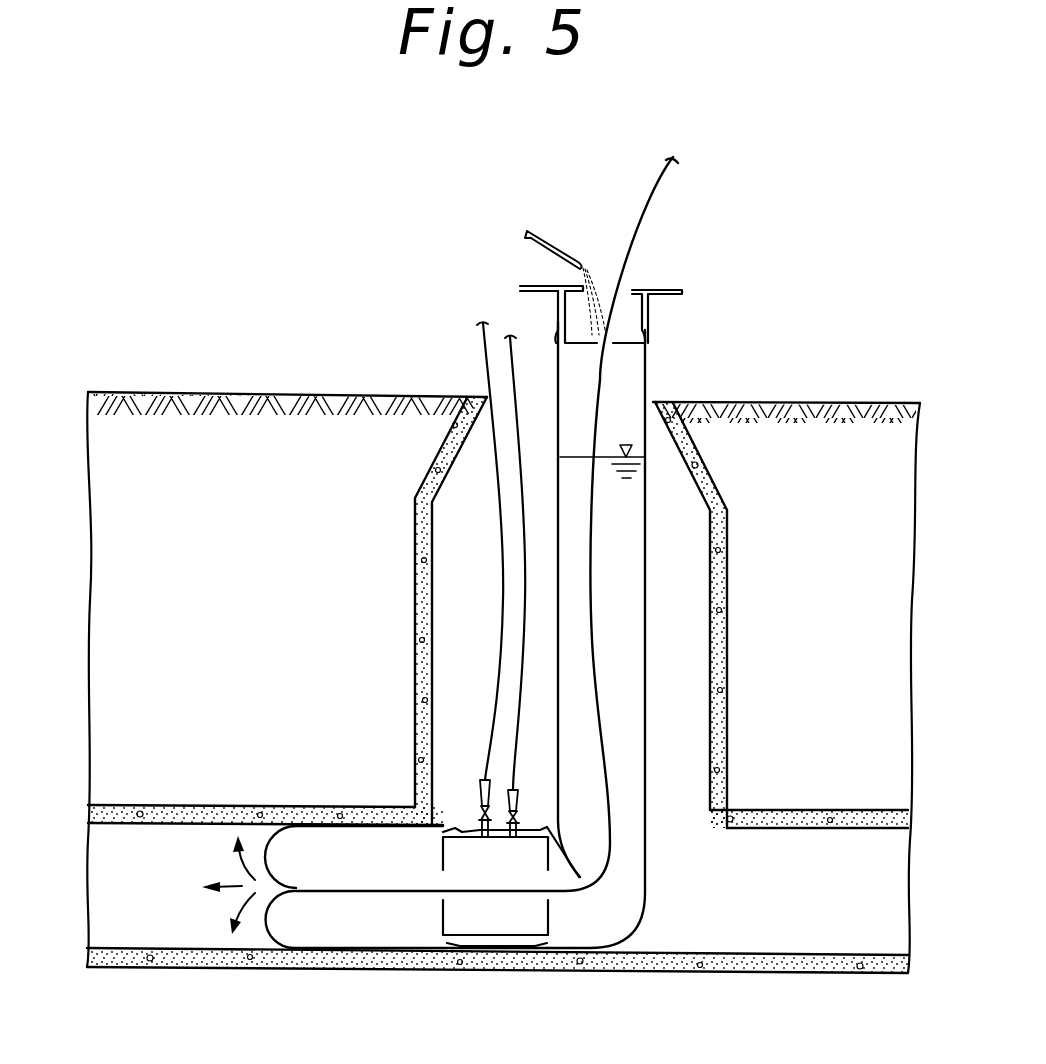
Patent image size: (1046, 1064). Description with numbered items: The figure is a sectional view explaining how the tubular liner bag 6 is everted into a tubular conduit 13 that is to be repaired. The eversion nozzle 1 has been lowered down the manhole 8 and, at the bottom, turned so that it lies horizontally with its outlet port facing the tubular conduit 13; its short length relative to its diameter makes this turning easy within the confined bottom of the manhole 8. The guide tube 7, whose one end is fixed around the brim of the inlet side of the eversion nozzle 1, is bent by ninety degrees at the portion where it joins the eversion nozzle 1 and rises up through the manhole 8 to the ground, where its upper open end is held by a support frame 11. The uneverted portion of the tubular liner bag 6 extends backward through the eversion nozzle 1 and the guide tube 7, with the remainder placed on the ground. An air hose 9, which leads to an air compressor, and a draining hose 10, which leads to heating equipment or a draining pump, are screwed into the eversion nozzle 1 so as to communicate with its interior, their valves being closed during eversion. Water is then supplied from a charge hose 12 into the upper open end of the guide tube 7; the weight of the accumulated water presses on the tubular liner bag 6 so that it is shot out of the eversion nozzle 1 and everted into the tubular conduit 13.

The eversion nozzle 1 is at (487, 947).
The tubular liner bag 6 is at (607, 873).
The guide tube 7 is at (648, 723).
The manhole 8 is at (433, 660).
The air hose 9 is at (512, 337).
The draining hose 10 is at (503, 543).
The support frame 11 is at (672, 298).
The charge hose 12 is at (552, 230).
The tubular conduit 13 is at (173, 824).